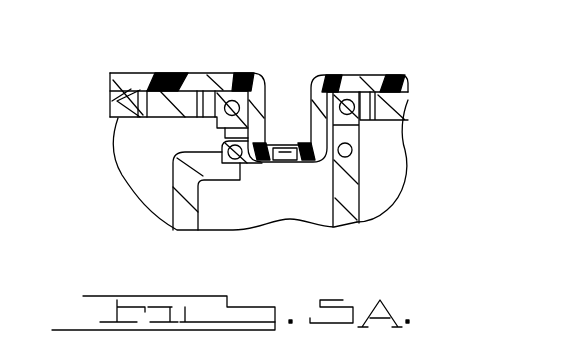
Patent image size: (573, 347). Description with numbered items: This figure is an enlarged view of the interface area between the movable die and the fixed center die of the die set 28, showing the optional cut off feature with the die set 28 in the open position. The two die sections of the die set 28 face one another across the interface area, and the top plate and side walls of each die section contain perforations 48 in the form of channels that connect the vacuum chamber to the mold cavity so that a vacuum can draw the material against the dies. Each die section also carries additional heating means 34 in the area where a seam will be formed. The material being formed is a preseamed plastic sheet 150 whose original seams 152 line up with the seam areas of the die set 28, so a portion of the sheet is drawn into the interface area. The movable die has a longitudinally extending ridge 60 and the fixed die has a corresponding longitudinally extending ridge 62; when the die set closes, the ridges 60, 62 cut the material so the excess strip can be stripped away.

The preseamed plastic sheet 150 is at (124, 76).
The additional heating means 34 is at (228, 103).
The seams 152 is at (283, 155).
The perforations 48 is at (118, 113).
The die set 28 is at (186, 183).
The longitudinally extending ridge 60 is at (251, 166).
The longitudinally extending ridge 62 is at (333, 160).